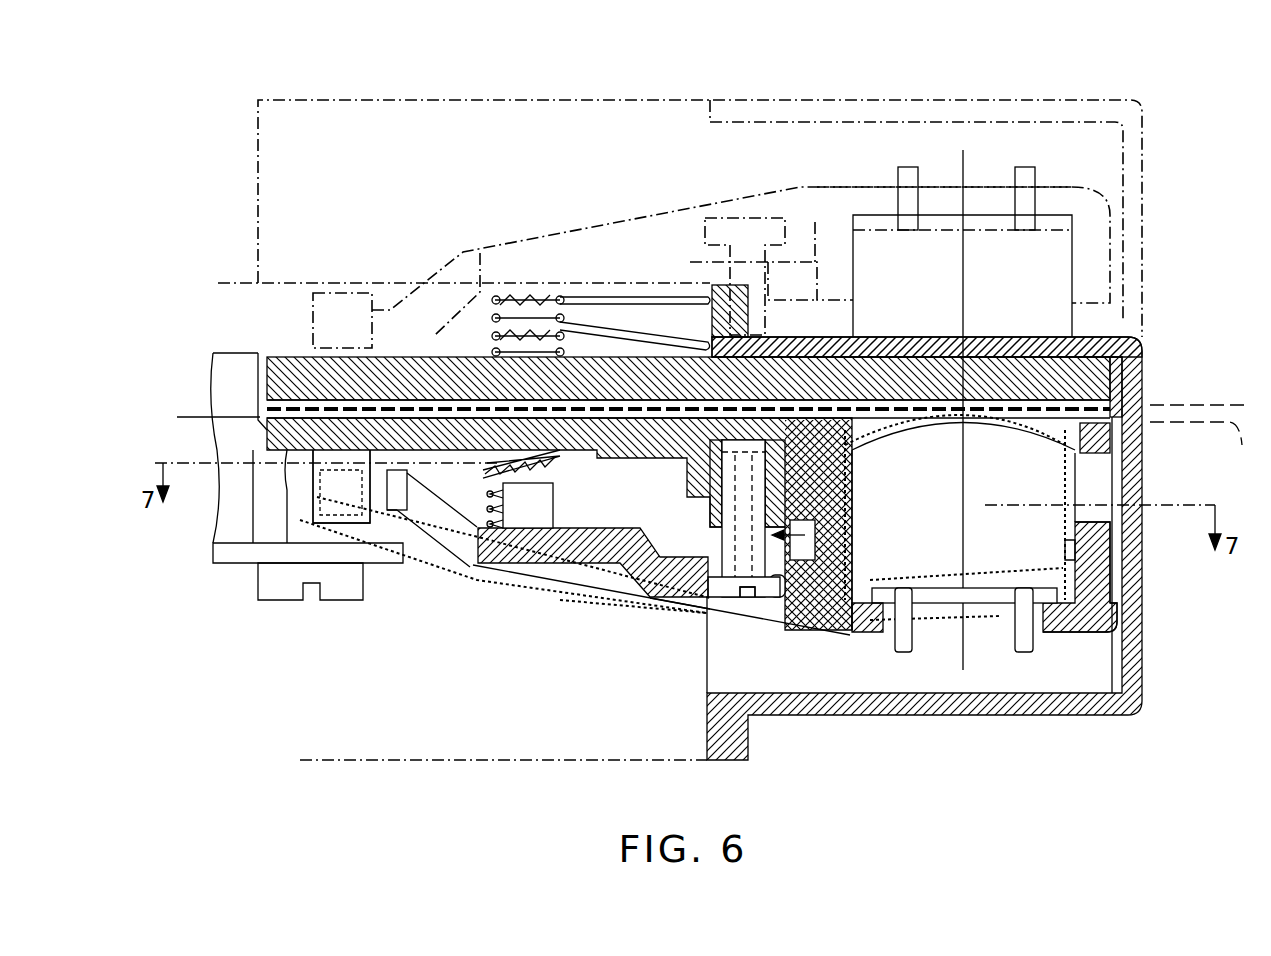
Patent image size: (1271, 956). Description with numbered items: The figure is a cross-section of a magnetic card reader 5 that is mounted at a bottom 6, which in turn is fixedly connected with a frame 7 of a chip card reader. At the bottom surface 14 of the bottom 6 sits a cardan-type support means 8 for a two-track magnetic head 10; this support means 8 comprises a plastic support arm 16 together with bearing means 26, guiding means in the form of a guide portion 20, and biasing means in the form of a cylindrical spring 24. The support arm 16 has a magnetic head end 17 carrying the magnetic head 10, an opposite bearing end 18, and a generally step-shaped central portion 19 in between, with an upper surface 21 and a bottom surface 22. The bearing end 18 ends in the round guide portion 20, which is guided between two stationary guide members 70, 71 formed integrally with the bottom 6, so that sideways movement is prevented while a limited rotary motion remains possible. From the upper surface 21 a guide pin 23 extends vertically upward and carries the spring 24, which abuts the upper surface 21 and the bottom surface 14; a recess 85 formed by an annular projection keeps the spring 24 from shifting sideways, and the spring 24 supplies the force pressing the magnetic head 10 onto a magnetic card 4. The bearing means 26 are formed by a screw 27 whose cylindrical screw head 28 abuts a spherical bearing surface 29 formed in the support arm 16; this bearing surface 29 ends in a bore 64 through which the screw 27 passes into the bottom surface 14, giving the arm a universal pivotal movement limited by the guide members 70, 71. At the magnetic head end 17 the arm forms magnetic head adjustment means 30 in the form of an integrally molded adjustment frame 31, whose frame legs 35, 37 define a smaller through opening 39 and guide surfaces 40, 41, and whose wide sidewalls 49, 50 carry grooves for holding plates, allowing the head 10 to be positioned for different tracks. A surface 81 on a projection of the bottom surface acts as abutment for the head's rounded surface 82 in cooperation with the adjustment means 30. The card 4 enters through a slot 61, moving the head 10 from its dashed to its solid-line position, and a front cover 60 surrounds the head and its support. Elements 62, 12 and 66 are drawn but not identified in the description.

The magnetic card reader 5 is at (1144, 90).
The housing cover (phantom) 62 is at (1075, 182).
The frame 7 is at (237, 370).
The recess 85 is at (490, 447).
The solenoid housing 12 is at (866, 412).
The rounded surface 82 is at (912, 412).
The front cover 60 is at (1098, 338).
The slot 61 is at (1100, 407).
The bottom 6 is at (275, 432).
The magnetic card 4 is at (1201, 437).
The magnetic head 10 is at (1028, 482).
The cylindrical spring 24 is at (573, 477).
The support or bearing means 26 is at (837, 497).
The abutment surface 81 is at (840, 532).
The plunger guide 66 is at (703, 500).
The upper surface 21 is at (572, 530).
The screw 27 is at (850, 533).
The frame leg 37 is at (860, 556).
The frame leg 35 is at (1093, 540).
The wide sidewall 50 is at (1108, 560).
The adjustment frame 31 is at (1122, 596).
The guide surface 40 is at (1110, 623).
The magnetic head adjustment means 30 is at (1108, 640).
The guide member 70 is at (327, 480).
The guide member 71 is at (341, 486).
The guide portion 20 is at (317, 543).
The bearing end 18 is at (438, 465).
The bottom surface 14 is at (415, 527).
The guide pin 23 is at (490, 567).
The bottom surface 22 is at (535, 572).
The central portion 19 is at (590, 568).
The cardan-type support means 8 is at (617, 628).
The support arm 16 is at (676, 622).
The bore 64 is at (733, 605).
The spherical bearing surface 29 is at (795, 628).
The cylindrical screw head 28 is at (767, 600).
The wide sidewall 49 is at (867, 593).
The guide surface 41 is at (915, 605).
The smaller opening 39 is at (1022, 613).
The magnetic head end 17 is at (1063, 633).